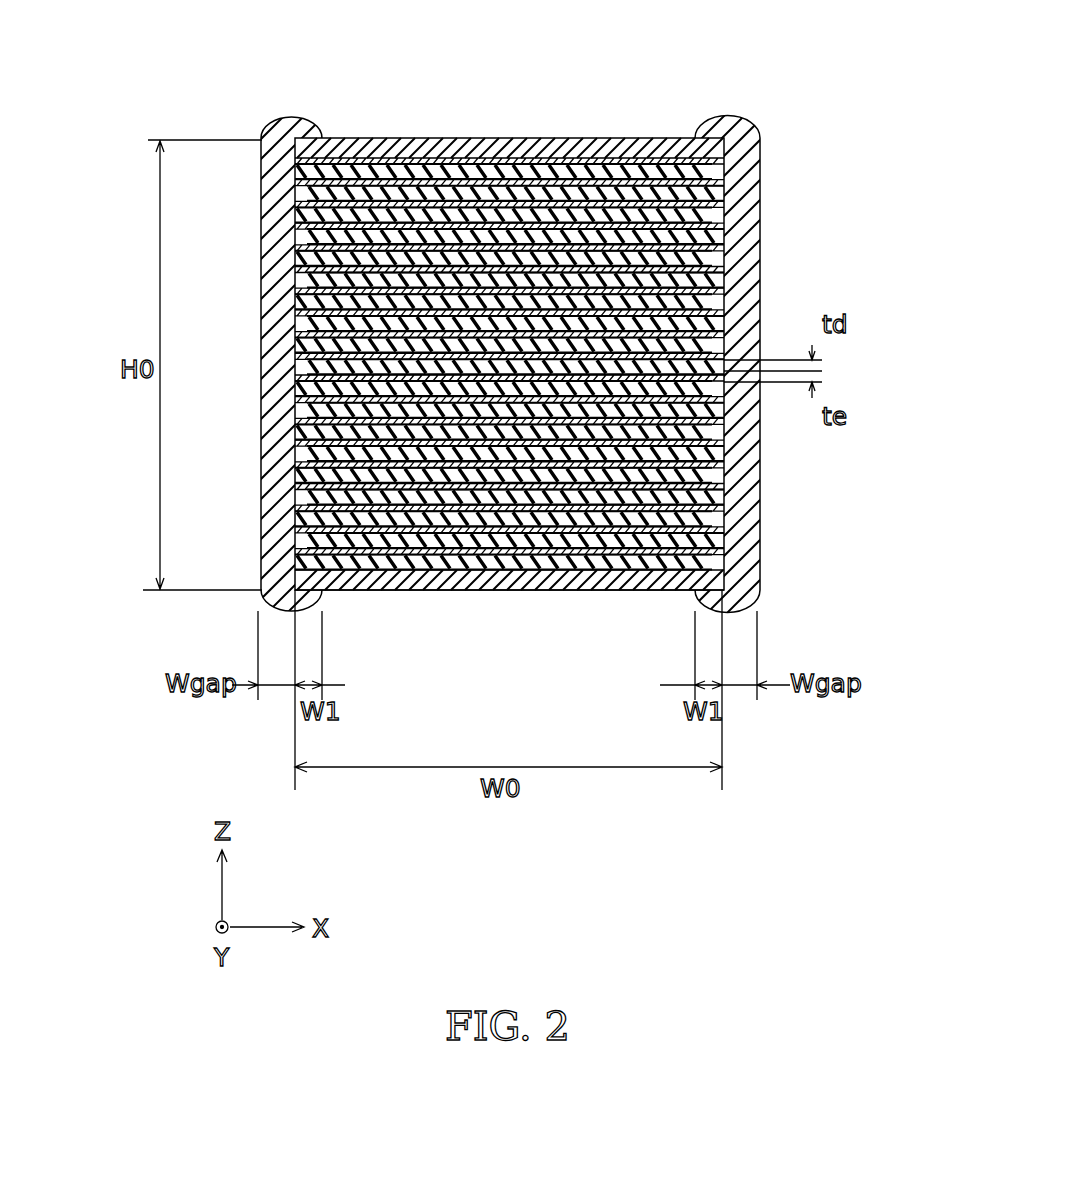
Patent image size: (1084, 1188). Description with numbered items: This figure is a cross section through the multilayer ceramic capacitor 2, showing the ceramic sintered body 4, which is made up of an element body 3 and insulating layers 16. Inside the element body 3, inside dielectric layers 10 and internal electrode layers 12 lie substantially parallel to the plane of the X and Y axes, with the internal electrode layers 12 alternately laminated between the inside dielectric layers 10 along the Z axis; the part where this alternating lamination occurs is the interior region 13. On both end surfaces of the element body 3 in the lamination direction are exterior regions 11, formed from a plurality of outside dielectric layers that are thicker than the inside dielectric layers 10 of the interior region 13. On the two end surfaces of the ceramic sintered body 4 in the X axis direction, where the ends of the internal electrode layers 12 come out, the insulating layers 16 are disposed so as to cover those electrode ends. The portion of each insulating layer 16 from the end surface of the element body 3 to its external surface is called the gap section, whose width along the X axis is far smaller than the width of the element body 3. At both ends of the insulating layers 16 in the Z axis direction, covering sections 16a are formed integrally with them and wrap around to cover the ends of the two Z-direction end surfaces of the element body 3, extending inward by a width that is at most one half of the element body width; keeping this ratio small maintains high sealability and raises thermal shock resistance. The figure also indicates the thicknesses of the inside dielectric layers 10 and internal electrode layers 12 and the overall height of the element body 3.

The multilayer ceramic capacitor 2 is at (542, 347).
The element body 3 is at (572, 592).
The ceramic sintered body 4 is at (524, 349).
The inside dielectric layer 10 is at (742, 204).
The exterior region 11 is at (490, 140).
The internal electrode layer 12 is at (750, 165).
The interior region 13 is at (524, 353).
The insulating layer 16 is at (302, 122).
The covering section 16a is at (318, 124).